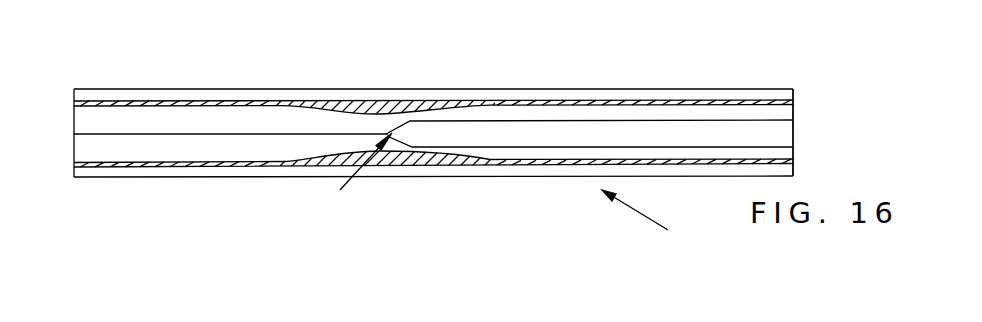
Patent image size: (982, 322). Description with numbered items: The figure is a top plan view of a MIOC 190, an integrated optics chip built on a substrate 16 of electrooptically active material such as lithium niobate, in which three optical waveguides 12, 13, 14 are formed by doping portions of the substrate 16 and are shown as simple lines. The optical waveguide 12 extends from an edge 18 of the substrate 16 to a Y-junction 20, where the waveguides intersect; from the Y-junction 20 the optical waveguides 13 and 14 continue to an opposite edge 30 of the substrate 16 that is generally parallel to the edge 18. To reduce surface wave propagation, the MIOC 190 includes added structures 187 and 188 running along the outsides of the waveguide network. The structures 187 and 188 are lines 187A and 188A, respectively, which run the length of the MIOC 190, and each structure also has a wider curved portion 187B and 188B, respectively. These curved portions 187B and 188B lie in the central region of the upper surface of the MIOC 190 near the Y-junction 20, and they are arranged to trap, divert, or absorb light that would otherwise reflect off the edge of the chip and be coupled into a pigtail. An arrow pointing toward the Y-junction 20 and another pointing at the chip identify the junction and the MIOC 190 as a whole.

The optical waveguide 12 is at (190, 134).
The optical waveguide 13 is at (530, 147).
The optical waveguide 14 is at (433, 120).
The substrate 16 is at (227, 177).
The edge 18 is at (74, 140).
The Y-junction 20 is at (354, 176).
The edge 30 is at (793, 110).
The structure 187 is at (403, 78).
The line 187A is at (116, 101).
The wider curved portion 187B is at (358, 100).
The structure 188 is at (402, 188).
The line 188A is at (118, 166).
The wider curved portion 188B is at (385, 167).
The MIOC 190 is at (657, 221).